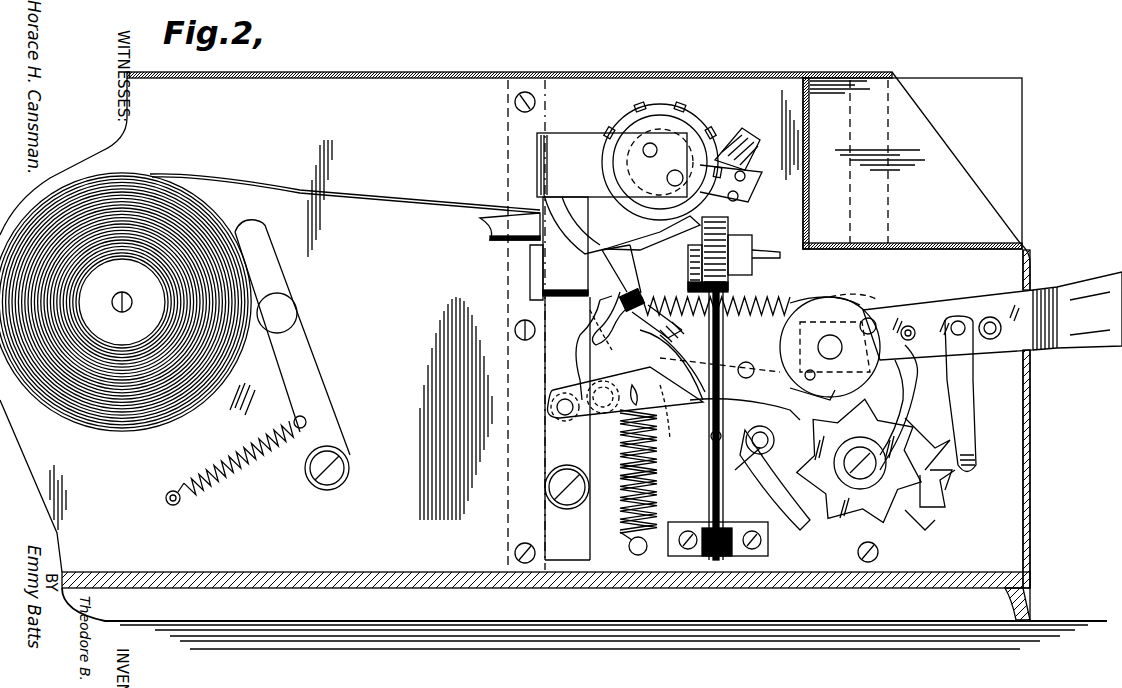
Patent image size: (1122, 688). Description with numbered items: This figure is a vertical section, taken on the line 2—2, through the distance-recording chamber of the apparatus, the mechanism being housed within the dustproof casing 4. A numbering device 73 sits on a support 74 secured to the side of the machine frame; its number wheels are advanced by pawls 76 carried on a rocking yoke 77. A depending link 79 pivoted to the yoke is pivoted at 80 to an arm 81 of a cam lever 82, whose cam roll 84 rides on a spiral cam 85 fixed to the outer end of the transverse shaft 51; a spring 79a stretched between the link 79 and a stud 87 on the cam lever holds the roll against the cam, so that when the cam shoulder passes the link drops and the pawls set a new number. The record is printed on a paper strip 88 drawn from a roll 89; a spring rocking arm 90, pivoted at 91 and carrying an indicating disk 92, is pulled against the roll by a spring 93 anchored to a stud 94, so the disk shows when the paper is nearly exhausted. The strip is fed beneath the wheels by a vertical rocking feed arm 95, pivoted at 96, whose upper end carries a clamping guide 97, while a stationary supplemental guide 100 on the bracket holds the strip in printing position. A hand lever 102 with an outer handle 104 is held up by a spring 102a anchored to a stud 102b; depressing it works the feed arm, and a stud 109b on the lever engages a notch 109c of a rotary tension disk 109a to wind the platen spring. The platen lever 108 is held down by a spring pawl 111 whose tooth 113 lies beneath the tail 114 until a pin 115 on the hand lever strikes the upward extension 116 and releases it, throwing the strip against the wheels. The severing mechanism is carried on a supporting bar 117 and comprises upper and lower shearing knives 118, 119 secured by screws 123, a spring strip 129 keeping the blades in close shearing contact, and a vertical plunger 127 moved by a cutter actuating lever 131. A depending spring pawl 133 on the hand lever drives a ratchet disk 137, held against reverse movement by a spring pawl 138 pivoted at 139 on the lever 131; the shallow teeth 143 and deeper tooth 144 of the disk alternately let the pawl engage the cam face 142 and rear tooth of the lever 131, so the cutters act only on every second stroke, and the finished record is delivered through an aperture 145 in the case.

The base plate 2 is at (350, 575).
The casing top wall 4 is at (540, 72).
The transverse shaft 51 is at (598, 410).
The numbering device 73 is at (625, 128).
The support 74 is at (537, 163).
The pawls 76 is at (745, 140).
The yoke 77 is at (749, 192).
The depending link 79 is at (648, 250).
The spring 79a is at (742, 306).
The pivot 80 is at (630, 405).
The arm 81 is at (668, 420).
The cam lever 82 is at (690, 345).
The cam roll 84 is at (645, 318).
The spiral cam 85 is at (660, 395).
The stud 87 is at (612, 465).
The strip of paper 88 is at (440, 222).
The roll 89 is at (130, 330).
The spring rocking arm 90 is at (300, 350).
The pivot 91 is at (340, 462).
The indicating disk 92 is at (297, 308).
The spring 93 is at (250, 462).
The stud 94 is at (180, 506).
The feed arm 95 is at (537, 278).
The pivot 96 is at (545, 488).
The guide 97 is at (525, 220).
The supplemental guide 100 is at (565, 246).
The hand lever 102 is at (818, 298).
The spring 102a is at (657, 475).
The stud 102b is at (628, 546).
The handle 104 is at (1070, 285).
The platen lever 108 is at (683, 363).
The rotary tension disk 109a is at (818, 300).
The stud 109b is at (880, 322).
The notch 109c is at (872, 320).
The spring pawl 111 is at (908, 385).
The pawl tooth 113 is at (859, 460).
The tail 114 is at (960, 372).
The pin 115 is at (960, 318).
The upward extension 116 is at (981, 320).
The supporting bar 117 is at (752, 243).
The upper shearing knife 118 is at (702, 240).
The lower shearing knife 119 is at (688, 250).
The screws 123 is at (690, 268).
The reciprocating rod 127 is at (722, 353).
The spring strip 129 is at (688, 288).
The cutter actuating lever 131 is at (745, 410).
The spring pawl 133 is at (977, 410).
The ratchet disk 137 is at (910, 510).
The spring pawl 138 is at (775, 490).
The pivot 139 is at (758, 455).
The cam face 142 is at (945, 502).
The shallow teeth 143 is at (905, 440).
The deeper ratchet tooth 144 is at (945, 470).
The aperture 145 is at (806, 218).